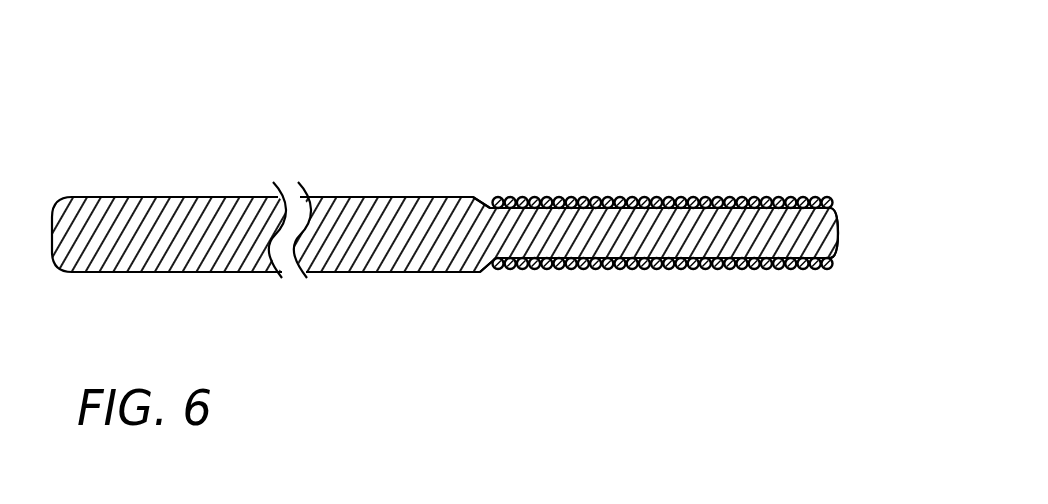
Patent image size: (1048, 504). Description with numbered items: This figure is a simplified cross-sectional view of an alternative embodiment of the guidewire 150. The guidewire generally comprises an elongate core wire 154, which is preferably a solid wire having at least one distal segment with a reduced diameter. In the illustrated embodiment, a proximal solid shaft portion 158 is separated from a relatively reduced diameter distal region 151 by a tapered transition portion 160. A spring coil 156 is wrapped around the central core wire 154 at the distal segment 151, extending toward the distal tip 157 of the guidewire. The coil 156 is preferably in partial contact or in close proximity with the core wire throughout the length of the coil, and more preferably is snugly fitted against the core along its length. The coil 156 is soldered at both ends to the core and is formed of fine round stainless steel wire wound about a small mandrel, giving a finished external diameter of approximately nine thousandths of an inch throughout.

The guidewire distal section 150 is at (523, 249).
The reduced diameter distal region 151 is at (820, 140).
The core wire 154 is at (368, 248).
The spring coil 156 is at (540, 196).
The distal tip 157 is at (866, 270).
The proximal solid shaft portion 158 is at (628, 240).
The tapered transition portion 160 is at (482, 266).